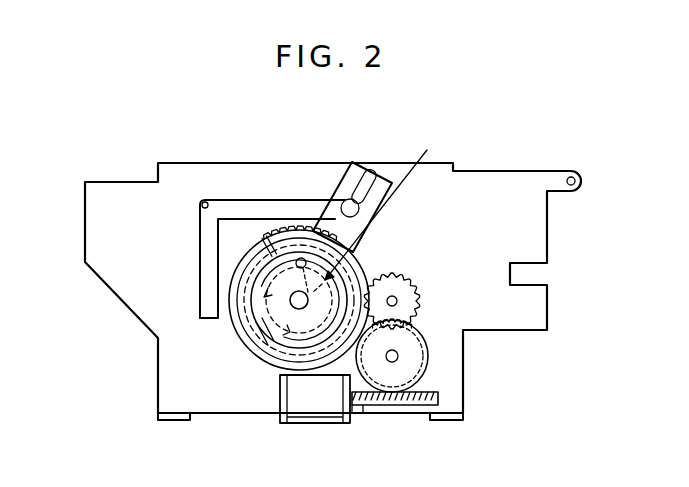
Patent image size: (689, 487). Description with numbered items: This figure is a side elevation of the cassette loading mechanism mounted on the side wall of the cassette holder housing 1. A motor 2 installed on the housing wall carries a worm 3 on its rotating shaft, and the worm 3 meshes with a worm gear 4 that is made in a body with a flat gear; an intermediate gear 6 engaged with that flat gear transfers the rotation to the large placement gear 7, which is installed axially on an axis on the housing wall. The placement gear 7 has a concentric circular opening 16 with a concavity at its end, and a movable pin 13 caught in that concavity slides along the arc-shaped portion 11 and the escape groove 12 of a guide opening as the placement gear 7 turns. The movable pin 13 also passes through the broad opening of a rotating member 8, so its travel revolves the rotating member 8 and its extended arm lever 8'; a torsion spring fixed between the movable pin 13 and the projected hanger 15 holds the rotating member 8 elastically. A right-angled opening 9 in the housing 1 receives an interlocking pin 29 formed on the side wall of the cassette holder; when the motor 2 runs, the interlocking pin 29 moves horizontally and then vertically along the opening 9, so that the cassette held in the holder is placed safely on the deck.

The cassette holder housing 1 is at (85, 182).
The motor 2 is at (318, 417).
The worm 3 is at (398, 406).
The worm gear 4 is at (428, 368).
The intermediate gear 6 is at (419, 304).
The placement gear 7 is at (262, 338).
The rotating member 8 is at (249, 191).
The extended arm lever 8' is at (356, 187).
The right-angled opening 9 is at (205, 202).
The arc-shaped portion 11 is at (257, 332).
The escape groove 12 is at (285, 346).
The movable pin 13 is at (300, 258).
The projected hanger 15 is at (384, 209).
The concentric circular opening 16 is at (276, 320).
The interlocking pin 29 is at (350, 200).